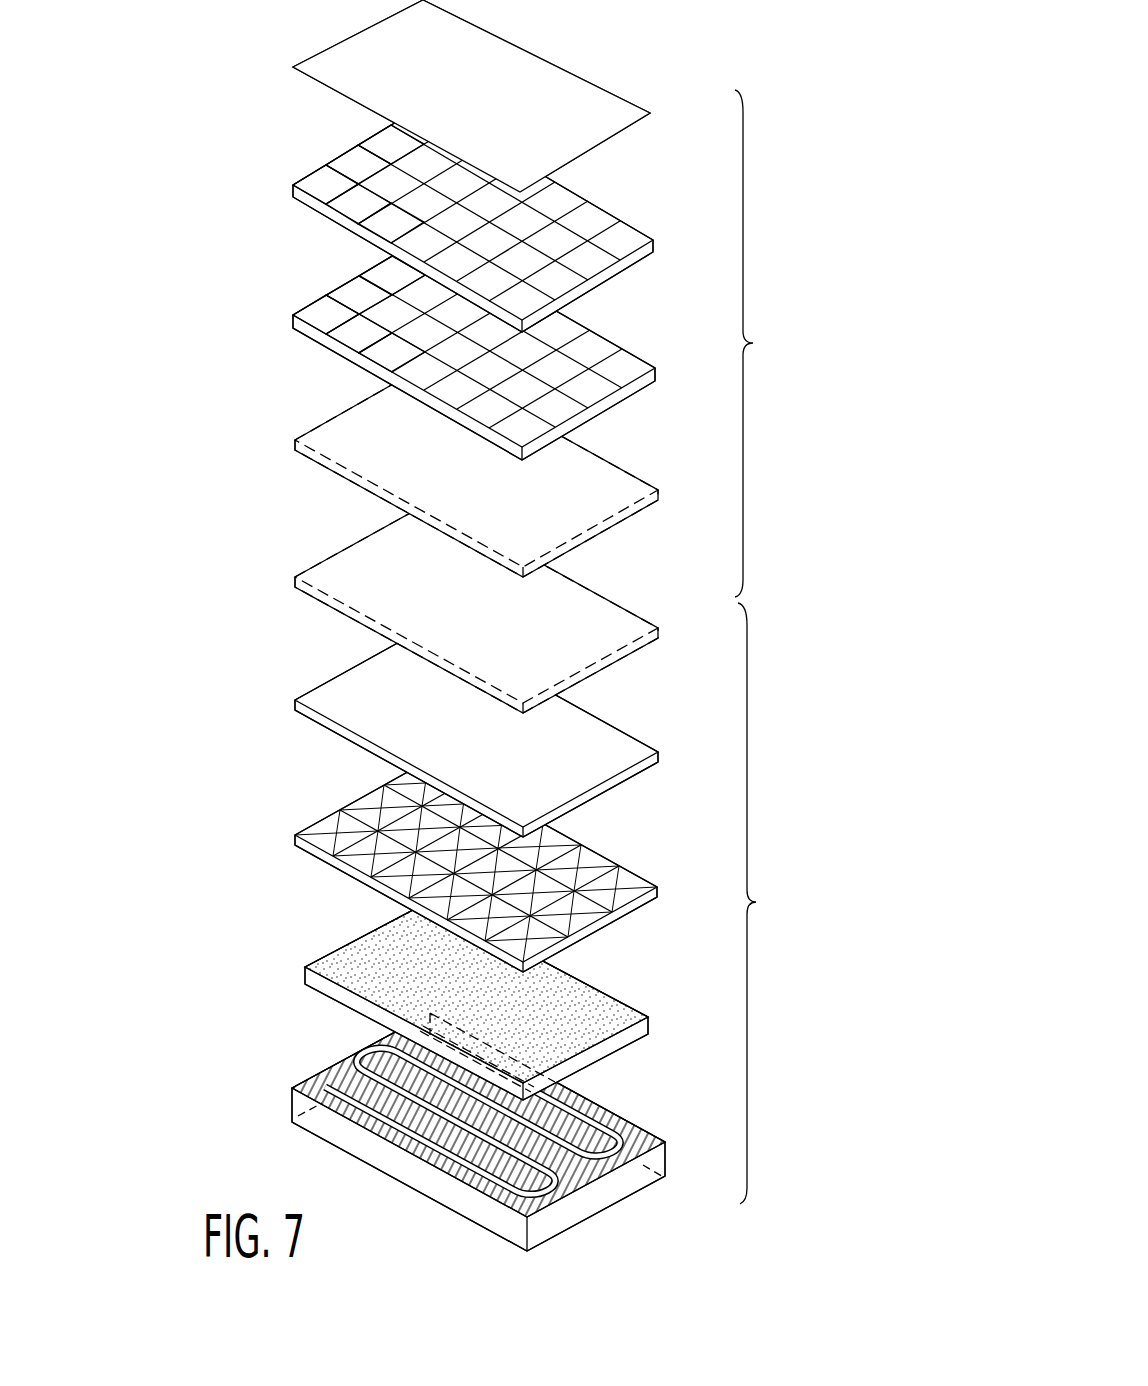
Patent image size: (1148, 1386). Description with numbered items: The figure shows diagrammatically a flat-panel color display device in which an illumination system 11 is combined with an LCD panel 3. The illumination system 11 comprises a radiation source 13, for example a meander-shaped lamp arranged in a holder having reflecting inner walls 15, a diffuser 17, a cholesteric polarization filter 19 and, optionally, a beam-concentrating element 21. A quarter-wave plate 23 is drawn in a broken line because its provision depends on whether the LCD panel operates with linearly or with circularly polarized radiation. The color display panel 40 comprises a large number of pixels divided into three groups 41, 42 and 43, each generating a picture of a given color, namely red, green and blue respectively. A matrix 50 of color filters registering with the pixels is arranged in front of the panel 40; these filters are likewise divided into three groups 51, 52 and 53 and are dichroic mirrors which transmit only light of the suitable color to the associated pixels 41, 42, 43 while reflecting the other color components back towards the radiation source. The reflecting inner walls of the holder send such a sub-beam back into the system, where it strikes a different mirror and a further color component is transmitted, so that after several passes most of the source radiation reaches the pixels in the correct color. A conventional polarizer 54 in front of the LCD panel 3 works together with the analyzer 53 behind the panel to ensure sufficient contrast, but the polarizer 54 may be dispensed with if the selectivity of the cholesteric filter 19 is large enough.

The LCD panel 3 is at (781, 357).
The illumination system 11 is at (797, 912).
The radiation source 13 is at (367, 1056).
The reflecting inner walls 15 is at (492, 1132).
The diffuser 17 is at (590, 1022).
The cholesteric polarization filter 19 is at (617, 762).
The beam-concentrating element 21 is at (625, 888).
The λ/4 plate 23 is at (640, 628).
The color display panel 40 is at (474, 218).
The pixels 41 is at (315, 183).
The pixels 42 is at (347, 162).
The pixels 43 is at (380, 140).
The matrix of color filters 50 is at (475, 230).
The color filters 51 is at (295, 320).
The color filters 52 is at (345, 294).
The color filters / analyzer 53 is at (368, 280).
The conventional polarizer 54 is at (590, 511).